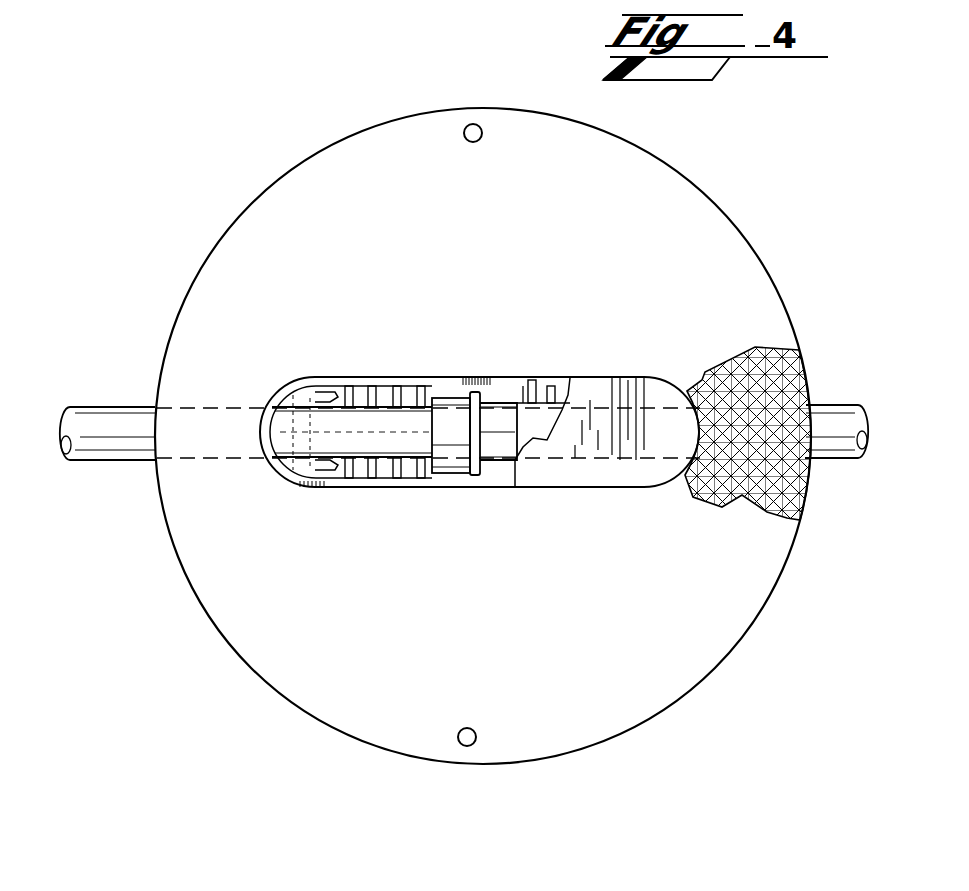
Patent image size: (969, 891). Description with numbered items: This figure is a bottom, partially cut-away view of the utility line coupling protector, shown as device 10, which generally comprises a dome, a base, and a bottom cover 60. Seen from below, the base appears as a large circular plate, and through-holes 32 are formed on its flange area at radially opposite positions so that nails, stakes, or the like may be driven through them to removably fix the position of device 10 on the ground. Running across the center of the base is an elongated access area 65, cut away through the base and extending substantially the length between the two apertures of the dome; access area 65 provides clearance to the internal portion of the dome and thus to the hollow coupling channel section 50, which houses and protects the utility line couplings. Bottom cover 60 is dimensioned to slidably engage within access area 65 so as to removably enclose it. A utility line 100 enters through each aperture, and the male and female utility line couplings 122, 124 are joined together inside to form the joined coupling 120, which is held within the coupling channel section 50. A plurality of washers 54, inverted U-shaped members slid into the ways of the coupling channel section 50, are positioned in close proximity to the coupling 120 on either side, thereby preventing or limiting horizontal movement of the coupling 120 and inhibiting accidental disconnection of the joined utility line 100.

The device 10 is at (175, 220).
The through-holes 32 is at (473, 124).
The coupling channel section 50 is at (352, 380).
The washers 54 is at (531, 380).
The bottom cover 60 is at (667, 404).
The access area 65 is at (293, 485).
The utility line 100 is at (850, 408).
The coupling 120 is at (492, 392).
The male utility line coupling 122 is at (508, 420).
The female utility line coupling 124 is at (455, 397).